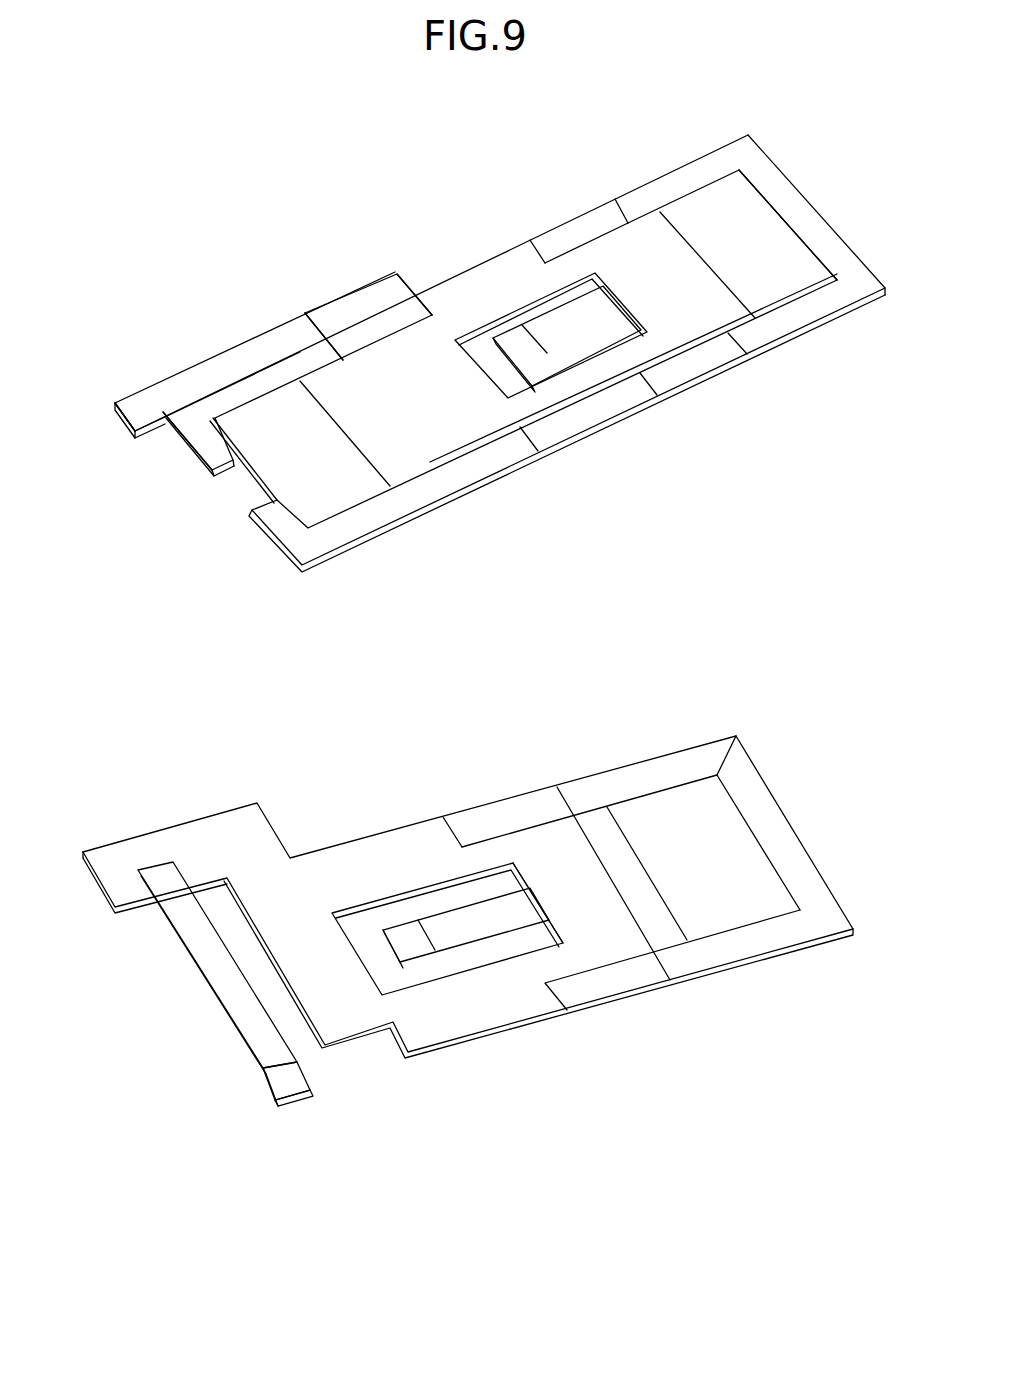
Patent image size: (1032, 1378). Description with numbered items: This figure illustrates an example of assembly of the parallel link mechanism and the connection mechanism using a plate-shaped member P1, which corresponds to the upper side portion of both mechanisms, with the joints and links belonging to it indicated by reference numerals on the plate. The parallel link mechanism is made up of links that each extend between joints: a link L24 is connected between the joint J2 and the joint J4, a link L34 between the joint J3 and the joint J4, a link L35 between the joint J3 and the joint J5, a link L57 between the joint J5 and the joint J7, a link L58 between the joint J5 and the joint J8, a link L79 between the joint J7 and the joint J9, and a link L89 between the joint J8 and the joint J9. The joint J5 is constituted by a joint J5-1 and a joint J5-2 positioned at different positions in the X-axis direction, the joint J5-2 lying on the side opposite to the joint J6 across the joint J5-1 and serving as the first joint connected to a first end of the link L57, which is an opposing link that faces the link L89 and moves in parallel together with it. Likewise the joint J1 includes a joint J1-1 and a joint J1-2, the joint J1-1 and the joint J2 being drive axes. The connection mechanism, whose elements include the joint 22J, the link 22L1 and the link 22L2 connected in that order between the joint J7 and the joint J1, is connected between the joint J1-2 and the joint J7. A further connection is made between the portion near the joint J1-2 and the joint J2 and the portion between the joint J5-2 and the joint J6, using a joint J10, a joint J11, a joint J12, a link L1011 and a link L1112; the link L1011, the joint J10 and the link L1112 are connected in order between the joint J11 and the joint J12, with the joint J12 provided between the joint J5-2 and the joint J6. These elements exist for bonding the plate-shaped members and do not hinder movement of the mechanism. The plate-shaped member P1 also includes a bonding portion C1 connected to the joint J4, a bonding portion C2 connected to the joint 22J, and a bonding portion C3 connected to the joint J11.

The plate-shaped member P1 is at (188, 197).
The joint 22J is at (148, 403).
The bonding portion C2 is at (131, 420).
The link 22L1 is at (203, 398).
The joint J9 is at (184, 428).
The link L79 is at (205, 382).
The link L89 is at (290, 440).
The joint J8 is at (301, 385).
The link L58 is at (317, 328).
The joint J7 is at (346, 340).
The link L57 is at (385, 320).
The joint J5-2 is at (429, 300).
The joint J5-1 is at (541, 250).
The link L35 is at (581, 232).
The joint J3 is at (622, 205).
The link L34 is at (661, 188).
The joint J6 is at (701, 247).
The joint J4 is at (762, 190).
The bonding portion C1 is at (802, 212).
The bonding portion C3 is at (527, 356).
The joint J11 is at (548, 347).
The link L1112 is at (586, 322).
The joint J12 is at (632, 304).
The joint J1-2 is at (184, 866).
The joint J1-1 is at (456, 827).
The link L24 is at (706, 795).
The joint J2 is at (624, 828).
The link 22L2 is at (218, 965).
The link L1011 is at (482, 913).
The joint J10 is at (551, 908).